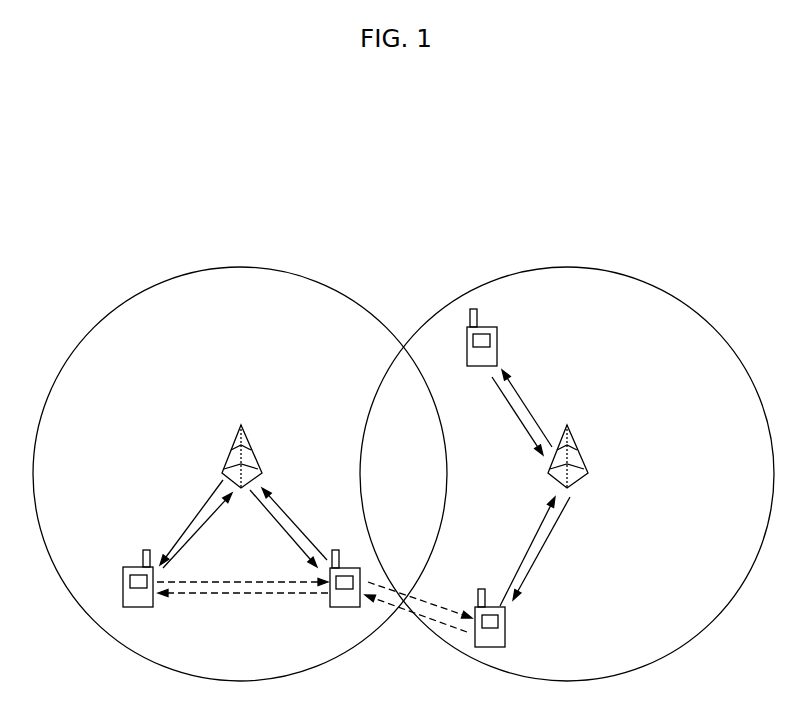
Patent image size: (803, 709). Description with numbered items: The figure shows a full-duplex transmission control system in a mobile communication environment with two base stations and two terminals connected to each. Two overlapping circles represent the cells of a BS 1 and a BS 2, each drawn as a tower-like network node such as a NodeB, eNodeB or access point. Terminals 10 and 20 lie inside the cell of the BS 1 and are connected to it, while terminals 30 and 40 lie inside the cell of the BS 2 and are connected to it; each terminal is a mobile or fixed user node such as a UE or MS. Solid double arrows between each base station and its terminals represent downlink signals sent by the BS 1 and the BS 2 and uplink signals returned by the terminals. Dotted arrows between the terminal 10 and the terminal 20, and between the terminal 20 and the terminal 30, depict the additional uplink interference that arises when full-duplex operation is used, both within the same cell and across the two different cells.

The BS 1 is at (241, 425).
The BS 2 is at (567, 425).
The terminal 10 is at (135, 567).
The terminal 20 is at (348, 568).
The terminal 30 is at (498, 607).
The terminal 40 is at (487, 327).